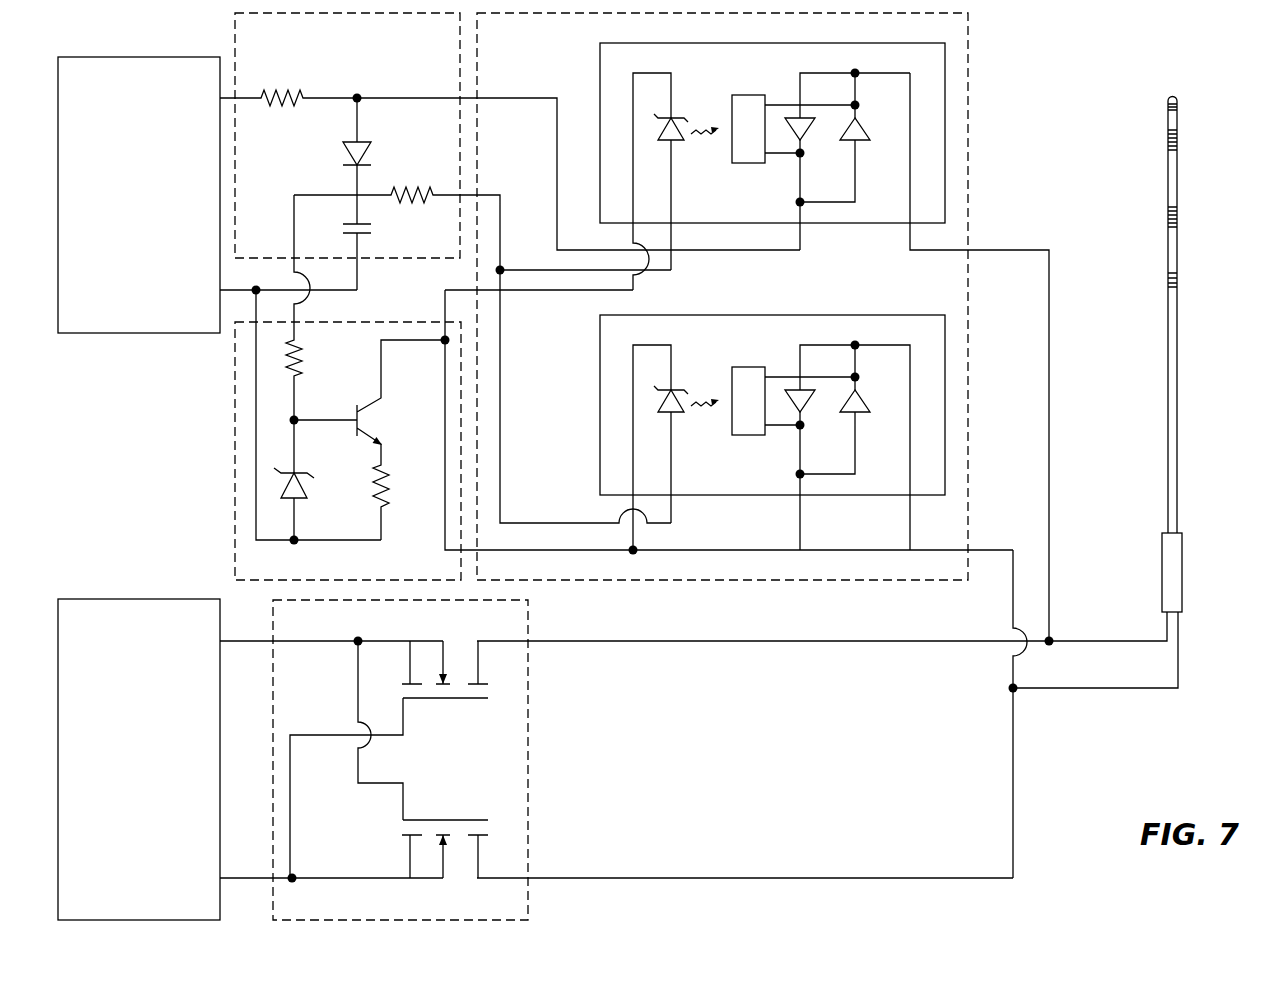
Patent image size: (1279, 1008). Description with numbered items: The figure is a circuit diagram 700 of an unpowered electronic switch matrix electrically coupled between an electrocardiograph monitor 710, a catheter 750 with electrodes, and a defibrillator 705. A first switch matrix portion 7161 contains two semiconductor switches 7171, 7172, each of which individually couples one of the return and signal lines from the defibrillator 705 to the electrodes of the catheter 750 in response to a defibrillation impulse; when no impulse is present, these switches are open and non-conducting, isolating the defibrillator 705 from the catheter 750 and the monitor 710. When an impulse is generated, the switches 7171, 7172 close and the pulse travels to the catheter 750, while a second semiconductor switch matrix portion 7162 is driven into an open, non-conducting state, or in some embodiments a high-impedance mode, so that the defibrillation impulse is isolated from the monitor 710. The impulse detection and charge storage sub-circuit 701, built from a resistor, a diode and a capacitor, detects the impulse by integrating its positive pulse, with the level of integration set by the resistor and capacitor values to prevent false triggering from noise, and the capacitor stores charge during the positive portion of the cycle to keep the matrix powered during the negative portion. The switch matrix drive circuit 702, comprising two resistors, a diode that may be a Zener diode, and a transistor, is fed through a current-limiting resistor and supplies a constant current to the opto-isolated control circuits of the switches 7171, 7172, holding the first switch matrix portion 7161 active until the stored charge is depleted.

The circuit diagram 700 is at (1066, 43).
The impulse detection and charge storage sub-circuit 701 is at (235, 38).
The switch matrix drive circuit 702 is at (235, 440).
The defibrillator 705 is at (136, 333).
The electrocardiograph monitor 710 is at (138, 599).
The first switch matrix portion 7161 is at (968, 197).
The second semiconductor switch matrix portion 7162 is at (528, 759).
The semiconductor switch 7171 is at (946, 100).
The semiconductor switch 7172 is at (797, 314).
The catheter 750 is at (1182, 570).